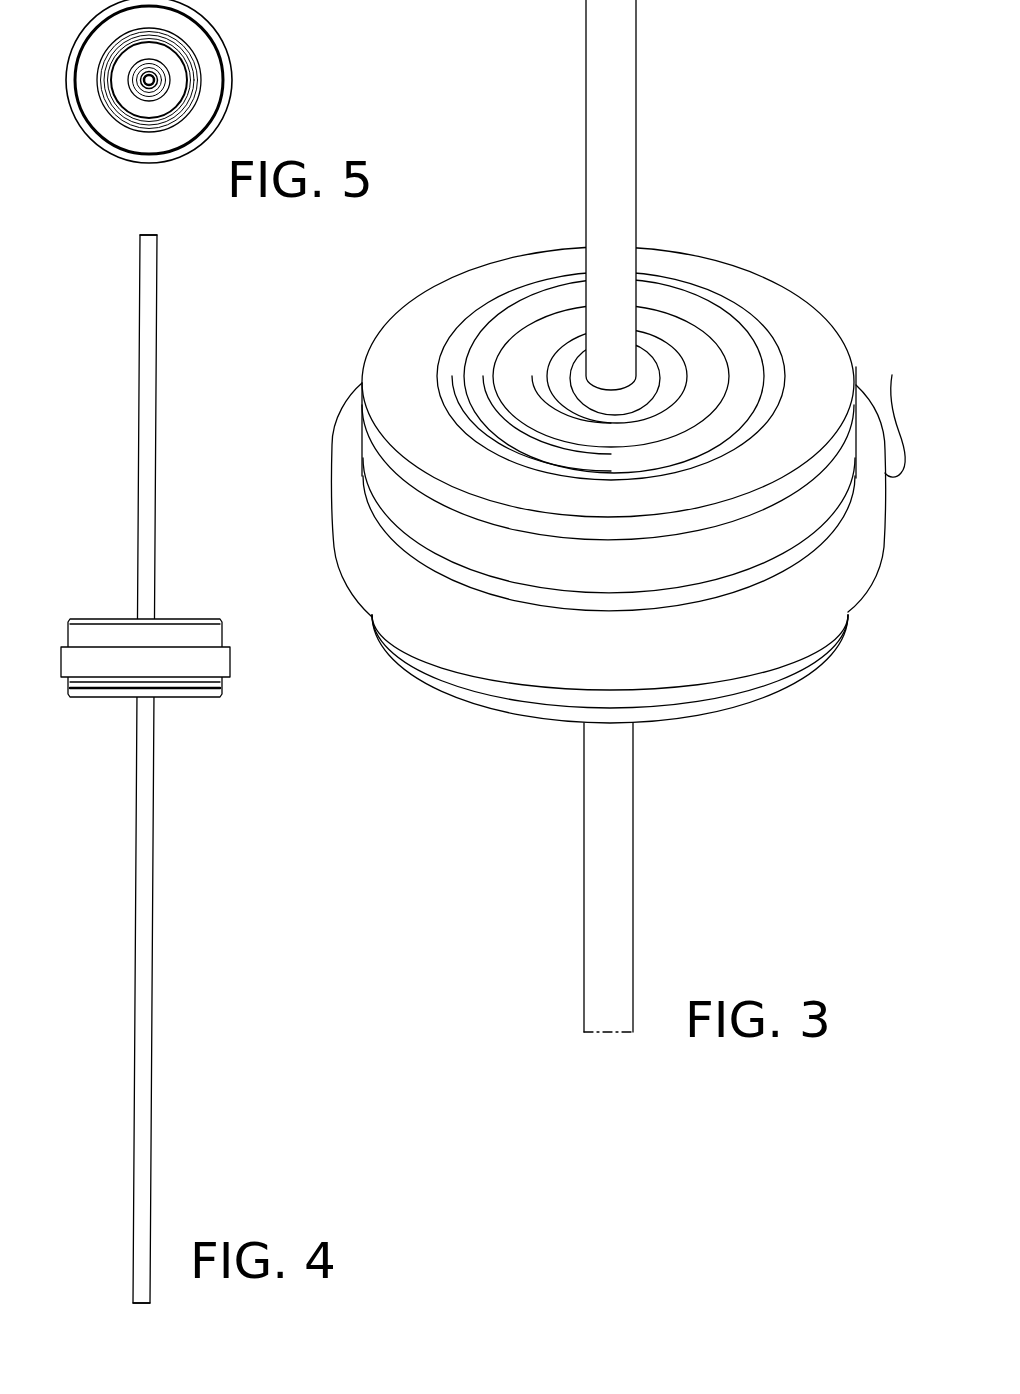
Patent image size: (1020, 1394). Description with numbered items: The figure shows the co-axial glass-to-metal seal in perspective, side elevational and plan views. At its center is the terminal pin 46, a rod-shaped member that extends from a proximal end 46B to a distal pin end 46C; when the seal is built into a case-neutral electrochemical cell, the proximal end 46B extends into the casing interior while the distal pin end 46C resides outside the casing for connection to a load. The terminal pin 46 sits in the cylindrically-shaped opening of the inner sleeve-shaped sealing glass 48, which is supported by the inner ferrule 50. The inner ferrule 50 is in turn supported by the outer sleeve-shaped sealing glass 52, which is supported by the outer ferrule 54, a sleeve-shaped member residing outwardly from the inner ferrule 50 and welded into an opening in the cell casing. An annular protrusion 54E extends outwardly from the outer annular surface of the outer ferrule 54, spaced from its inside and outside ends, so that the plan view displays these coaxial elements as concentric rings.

In FIG. 3, the terminal pin 46 is at (622, 65).
In FIG. 4, the terminal pin 46 is at (152, 842).
In FIG. 5, the terminal pin 46 is at (148, 79).
In FIG. 3, the proximal end 46B is at (616, 889).
In FIG. 4, the proximal end 46B is at (141, 1170).
In FIG. 4, the distal pin end 46C is at (158, 278).
In FIG. 3, the inner sleeve-shaped sealing glass 48 is at (648, 377).
In FIG. 5, the inner sleeve-shaped sealing glass 48 is at (135, 88).
In FIG. 3, the inner ferrule 50 is at (707, 383).
In FIG. 5, the inner ferrule 50 is at (135, 106).
In FIG. 3, the outer sleeve-shaped sealing glass 52 is at (757, 398).
In FIG. 5, the outer sleeve-shaped sealing glass 52 is at (193, 88).
In FIG. 3, the outer ferrule 54 is at (810, 403).
In FIG. 4, the outer ferrule 54 is at (223, 638).
In FIG. 5, the outer ferrule 54 is at (213, 62).
In FIG. 3, the annular protrusion 54E is at (892, 375).
In FIG. 4, the annular protrusion 54E is at (231, 660).
In FIG. 5, the annular protrusion 54E is at (213, 28).